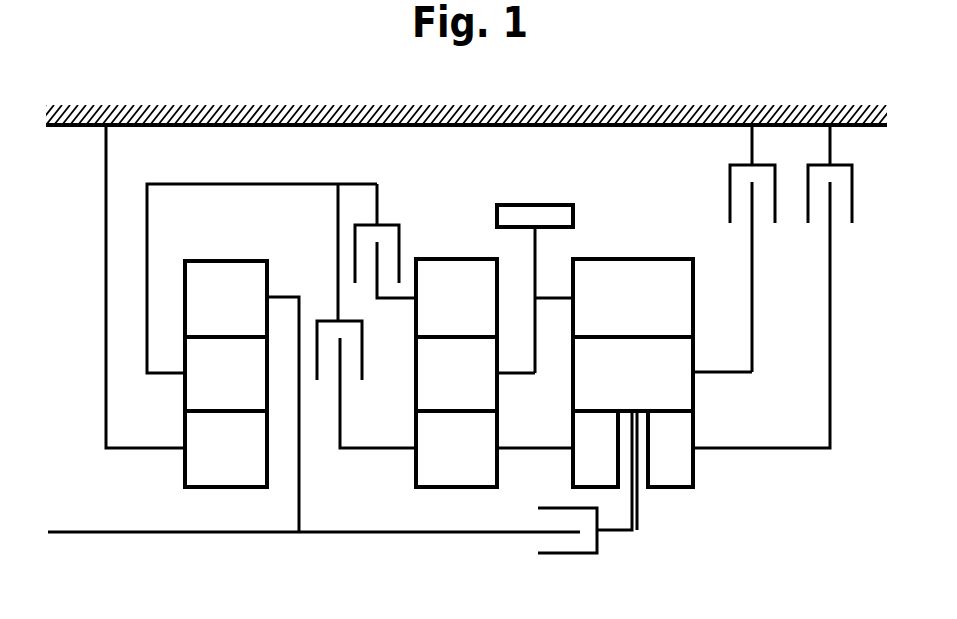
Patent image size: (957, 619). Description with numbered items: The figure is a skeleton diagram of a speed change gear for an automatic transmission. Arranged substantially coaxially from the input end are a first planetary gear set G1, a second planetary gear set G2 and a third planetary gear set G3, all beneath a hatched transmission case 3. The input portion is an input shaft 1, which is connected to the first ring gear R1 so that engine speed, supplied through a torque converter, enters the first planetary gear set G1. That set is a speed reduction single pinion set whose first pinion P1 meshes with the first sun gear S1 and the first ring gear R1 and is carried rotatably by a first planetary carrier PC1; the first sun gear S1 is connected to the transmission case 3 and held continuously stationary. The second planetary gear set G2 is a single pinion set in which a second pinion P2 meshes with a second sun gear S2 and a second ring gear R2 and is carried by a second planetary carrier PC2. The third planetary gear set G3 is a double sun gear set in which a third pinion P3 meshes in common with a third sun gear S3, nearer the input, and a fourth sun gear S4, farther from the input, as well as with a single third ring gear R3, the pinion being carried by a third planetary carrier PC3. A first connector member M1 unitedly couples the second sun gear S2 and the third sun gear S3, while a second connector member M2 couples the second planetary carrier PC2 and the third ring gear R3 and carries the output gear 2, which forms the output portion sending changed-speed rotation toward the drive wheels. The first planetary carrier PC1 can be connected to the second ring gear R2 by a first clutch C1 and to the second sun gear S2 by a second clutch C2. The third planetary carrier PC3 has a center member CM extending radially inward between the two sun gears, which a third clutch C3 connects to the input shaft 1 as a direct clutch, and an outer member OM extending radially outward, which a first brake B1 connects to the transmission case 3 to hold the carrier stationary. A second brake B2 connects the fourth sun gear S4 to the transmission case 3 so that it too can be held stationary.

The input shaft 1 is at (133, 535).
The output gear 2 is at (575, 212).
The transmission case 3 is at (502, 104).
The first planetary gear set G1 is at (243, 252).
The second planetary gear set G2 is at (473, 252).
The third planetary gear set G3 is at (650, 252).
The first ring gear R1 is at (255, 408).
The first pinion P1 is at (226, 374).
The first sun gear S1 is at (173, 295).
The first planetary carrier PC1 is at (156, 378).
The second ring gear R2 is at (456, 300).
The second pinion P2 is at (456, 374).
The second sun gear S2 is at (456, 448).
The second planetary carrier PC2 is at (523, 378).
The third ring gear R3 is at (633, 300).
The third pinion P3 is at (633, 374).
The third sun gear S3 is at (595, 449).
The fourth sun gear S4 is at (670, 449).
The third planetary carrier PC3 is at (716, 370).
The first clutch C1 is at (386, 241).
The second clutch C2 is at (366, 316).
The third clutch C3 is at (586, 539).
The first brake B1 is at (757, 248).
The second brake B2 is at (778, 286).
The first connector member M1 is at (536, 450).
The second connector member M2 is at (533, 346).
The outer member OM is at (754, 310).
The center member CM is at (638, 511).